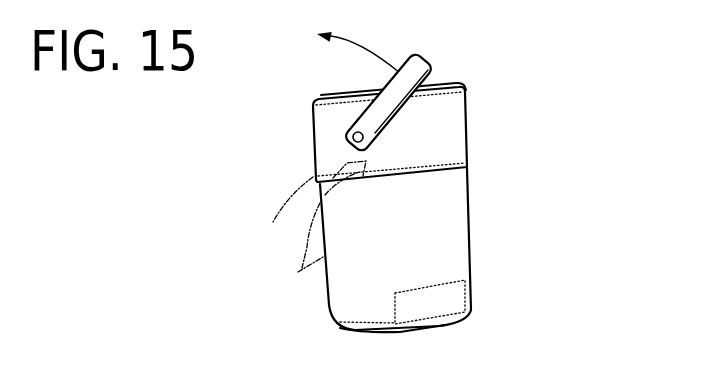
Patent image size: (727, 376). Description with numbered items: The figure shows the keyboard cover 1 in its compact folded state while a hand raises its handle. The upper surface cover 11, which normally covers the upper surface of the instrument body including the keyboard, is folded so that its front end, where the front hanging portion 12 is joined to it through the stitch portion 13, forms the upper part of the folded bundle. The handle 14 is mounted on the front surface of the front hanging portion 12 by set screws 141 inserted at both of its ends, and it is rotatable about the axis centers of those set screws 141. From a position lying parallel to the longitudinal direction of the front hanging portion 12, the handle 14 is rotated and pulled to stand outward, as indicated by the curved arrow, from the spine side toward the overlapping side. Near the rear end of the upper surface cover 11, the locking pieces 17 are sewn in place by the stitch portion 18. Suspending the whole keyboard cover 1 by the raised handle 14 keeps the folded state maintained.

The keyboard cover 1 is at (484, 167).
The upper surface cover 11 is at (457, 225).
The front hanging portion 12 is at (457, 152).
The stitch portion 13 is at (459, 86).
The handle 14 is at (413, 68).
The set screw 141 is at (352, 132).
The locking piece 17 is at (453, 305).
The stitch portion 18 is at (433, 328).